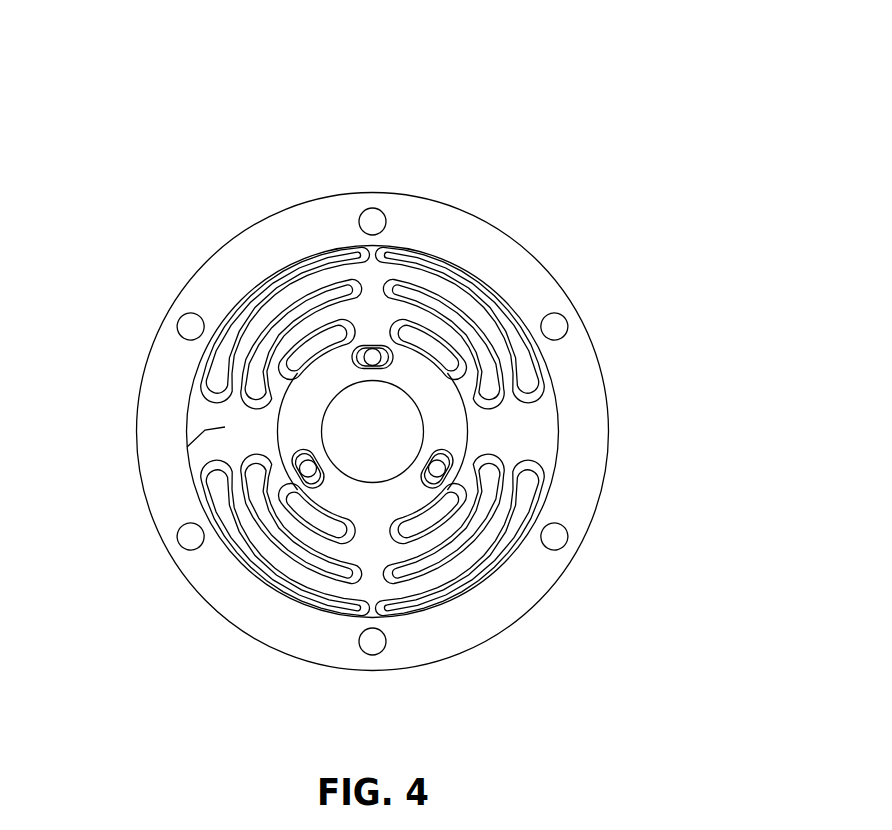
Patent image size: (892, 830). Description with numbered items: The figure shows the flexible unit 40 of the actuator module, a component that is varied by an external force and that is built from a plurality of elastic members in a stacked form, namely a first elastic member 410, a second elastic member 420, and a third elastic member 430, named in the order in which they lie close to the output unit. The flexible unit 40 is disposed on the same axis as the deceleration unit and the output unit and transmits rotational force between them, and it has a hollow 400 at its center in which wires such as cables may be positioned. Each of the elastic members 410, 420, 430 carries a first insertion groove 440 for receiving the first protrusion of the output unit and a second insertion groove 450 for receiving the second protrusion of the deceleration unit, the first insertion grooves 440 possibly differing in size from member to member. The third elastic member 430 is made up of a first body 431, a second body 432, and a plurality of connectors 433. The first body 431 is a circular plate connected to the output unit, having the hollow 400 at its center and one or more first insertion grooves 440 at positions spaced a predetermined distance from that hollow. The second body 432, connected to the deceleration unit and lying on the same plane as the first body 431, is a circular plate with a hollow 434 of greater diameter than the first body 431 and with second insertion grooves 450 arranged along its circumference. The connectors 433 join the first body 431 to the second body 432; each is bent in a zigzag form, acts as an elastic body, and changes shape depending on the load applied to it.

The flexible unit 40 is at (577, 30).
The hollow 400 is at (433, 420).
The first elastic member 410 is at (468, 527).
The second elastic member 420 is at (441, 474).
The third elastic member 430 is at (85, 90).
The first body 431 is at (262, 290).
The second body 432 is at (322, 216).
The connector 433 is at (322, 383).
The hollow 434 is at (225, 427).
The first insertion groove 440 is at (432, 474).
The second insertion groove 450 is at (568, 537).